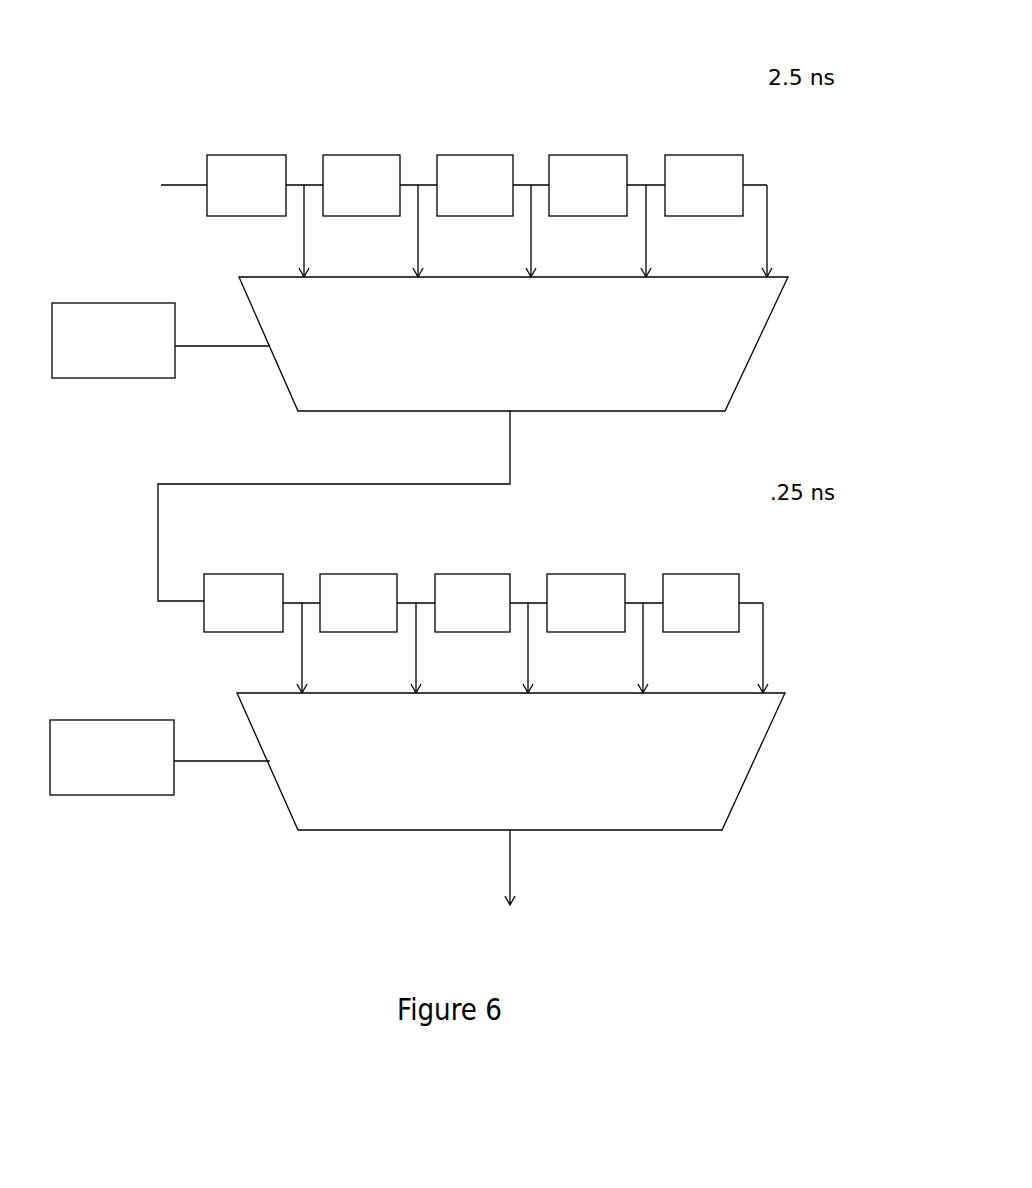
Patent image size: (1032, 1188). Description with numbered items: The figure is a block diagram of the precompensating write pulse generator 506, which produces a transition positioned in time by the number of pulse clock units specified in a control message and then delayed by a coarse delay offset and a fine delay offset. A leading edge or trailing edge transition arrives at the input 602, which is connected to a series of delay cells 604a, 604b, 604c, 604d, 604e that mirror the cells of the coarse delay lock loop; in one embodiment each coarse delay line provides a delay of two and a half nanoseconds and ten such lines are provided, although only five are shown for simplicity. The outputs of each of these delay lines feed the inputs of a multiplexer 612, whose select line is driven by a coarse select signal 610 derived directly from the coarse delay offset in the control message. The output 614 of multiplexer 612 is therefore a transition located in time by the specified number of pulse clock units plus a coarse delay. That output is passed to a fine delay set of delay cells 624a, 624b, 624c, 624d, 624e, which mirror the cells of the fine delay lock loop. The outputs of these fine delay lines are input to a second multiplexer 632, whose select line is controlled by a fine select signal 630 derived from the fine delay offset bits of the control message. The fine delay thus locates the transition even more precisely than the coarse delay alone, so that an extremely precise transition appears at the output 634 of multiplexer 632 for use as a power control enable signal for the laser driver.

The precompensating write pulse generator 506 is at (631, 56).
The input 602 is at (112, 159).
The delay cell 604a is at (247, 155).
The delay cell 604b is at (362, 155).
The delay cell 604c is at (475, 155).
The delay cell 604d is at (588, 155).
The delay cell 604e is at (704, 155).
The coarse select signal 610 is at (113, 303).
The multiplexer 612 is at (757, 350).
The output of multiplexer 614 is at (510, 449).
The delay cell 624a is at (245, 574).
The delay cell 624b is at (358, 574).
The delay cell 624c is at (472, 574).
The delay cell 624d is at (586, 574).
The delay cell 624e is at (700, 574).
The fine select signal 630 is at (112, 720).
The multiplexer 632 is at (755, 765).
The output 634 is at (510, 862).